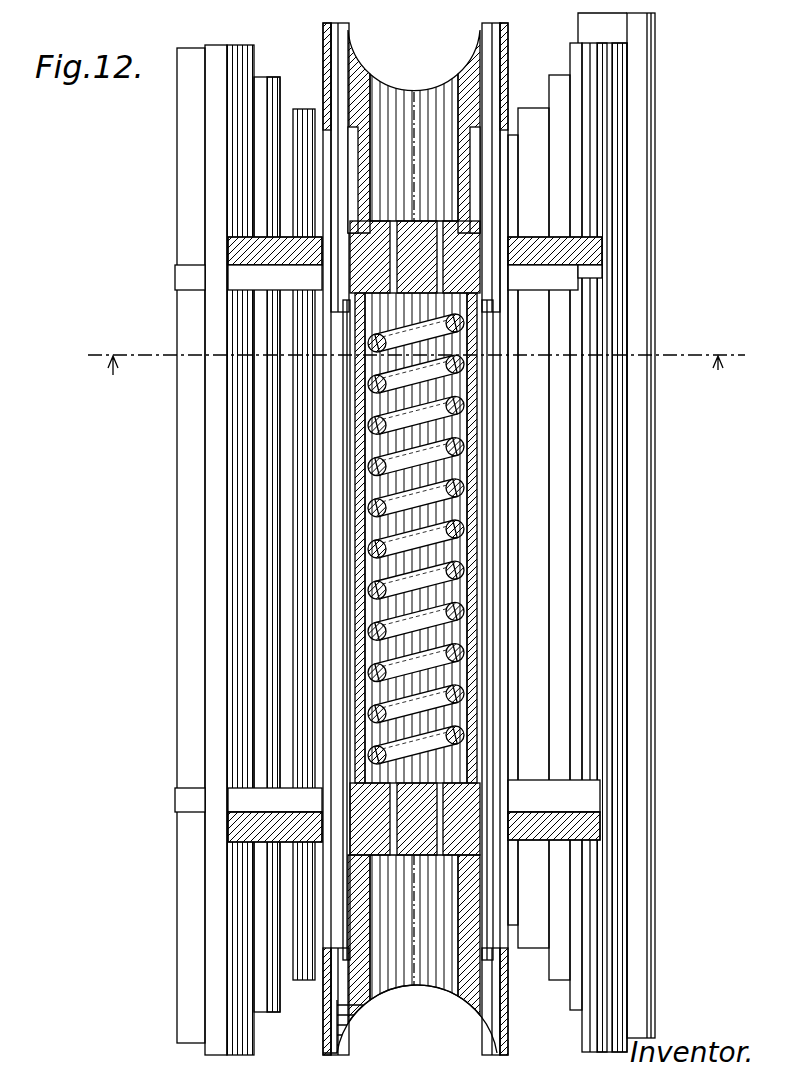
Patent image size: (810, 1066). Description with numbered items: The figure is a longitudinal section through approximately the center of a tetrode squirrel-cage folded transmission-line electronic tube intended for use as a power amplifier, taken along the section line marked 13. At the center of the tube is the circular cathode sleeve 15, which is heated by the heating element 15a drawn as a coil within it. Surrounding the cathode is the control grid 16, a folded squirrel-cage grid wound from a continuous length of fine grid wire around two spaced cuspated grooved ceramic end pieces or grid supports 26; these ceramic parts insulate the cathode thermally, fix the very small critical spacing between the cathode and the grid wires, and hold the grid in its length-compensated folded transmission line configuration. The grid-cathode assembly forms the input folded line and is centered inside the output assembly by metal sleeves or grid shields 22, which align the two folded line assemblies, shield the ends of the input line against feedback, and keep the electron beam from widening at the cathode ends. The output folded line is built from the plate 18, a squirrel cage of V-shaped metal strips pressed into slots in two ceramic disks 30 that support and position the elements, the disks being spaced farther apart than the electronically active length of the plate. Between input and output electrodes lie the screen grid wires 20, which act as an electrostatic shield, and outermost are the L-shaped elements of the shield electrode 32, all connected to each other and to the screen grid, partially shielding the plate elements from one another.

The section line 13- 13 is at (416, 376).
The cathode 15 is at (462, 262).
The heating element 15a is at (425, 335).
The control grid 16 is at (380, 745).
The plate 18 is at (265, 623).
The screen grid wires 20 is at (512, 336).
The grid shield sleeves 22 is at (326, 36).
The grid supports 26 is at (392, 90).
The ceramic disks 30 is at (228, 245).
The shield electrode 32 is at (190, 520).